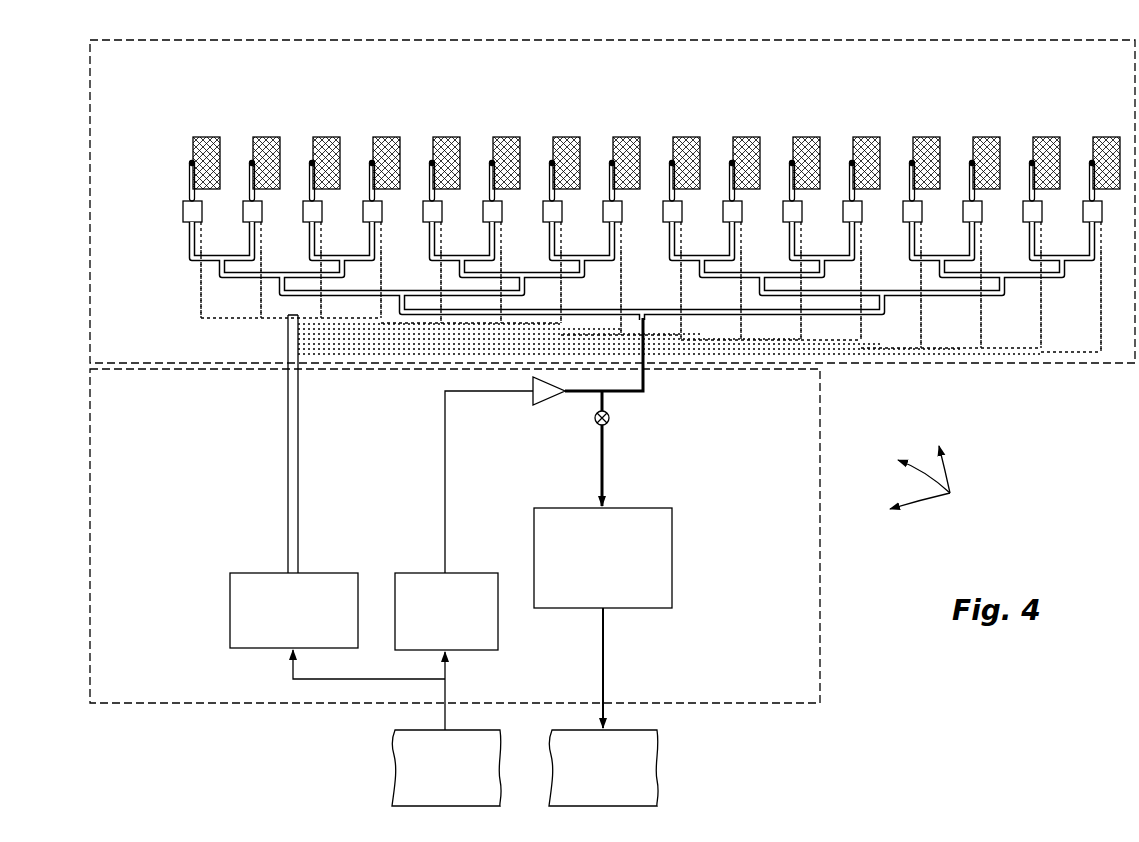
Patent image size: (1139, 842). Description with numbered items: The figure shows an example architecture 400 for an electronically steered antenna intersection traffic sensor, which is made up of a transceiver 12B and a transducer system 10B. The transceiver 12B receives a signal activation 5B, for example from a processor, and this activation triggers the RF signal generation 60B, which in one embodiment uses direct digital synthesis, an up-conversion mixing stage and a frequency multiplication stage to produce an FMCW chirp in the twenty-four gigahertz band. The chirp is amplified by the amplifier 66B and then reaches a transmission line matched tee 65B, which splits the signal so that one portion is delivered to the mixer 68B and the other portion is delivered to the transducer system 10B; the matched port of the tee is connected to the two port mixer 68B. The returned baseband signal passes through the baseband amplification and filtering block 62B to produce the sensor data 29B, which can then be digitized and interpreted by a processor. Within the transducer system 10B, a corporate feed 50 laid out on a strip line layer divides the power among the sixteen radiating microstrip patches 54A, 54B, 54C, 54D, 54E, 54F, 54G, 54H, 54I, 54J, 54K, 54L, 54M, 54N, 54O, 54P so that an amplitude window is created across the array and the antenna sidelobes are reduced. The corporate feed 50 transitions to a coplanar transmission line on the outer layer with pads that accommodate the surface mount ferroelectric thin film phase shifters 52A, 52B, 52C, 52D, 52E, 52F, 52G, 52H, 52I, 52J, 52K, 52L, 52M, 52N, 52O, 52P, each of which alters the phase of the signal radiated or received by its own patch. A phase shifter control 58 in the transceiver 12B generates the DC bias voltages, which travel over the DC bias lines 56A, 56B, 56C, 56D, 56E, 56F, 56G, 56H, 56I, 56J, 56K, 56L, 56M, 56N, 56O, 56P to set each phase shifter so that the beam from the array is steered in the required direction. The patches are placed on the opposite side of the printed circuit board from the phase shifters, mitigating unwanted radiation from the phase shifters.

The transducer system 10B is at (213, 93).
The transceiver 12B is at (133, 427).
The microstrip patch 54A is at (193, 140).
The microstrip patch 54B is at (251, 147).
The microstrip patch 54C is at (311, 147).
The microstrip patch 54D is at (371, 147).
The microstrip patch 54E is at (431, 147).
The microstrip patch 54F is at (491, 147).
The microstrip patch 54G is at (551, 147).
The microstrip patch 54H is at (611, 147).
The microstrip patch 54I is at (671, 147).
The microstrip patch 54J is at (731, 147).
The microstrip patch 54K is at (791, 147).
The microstrip patch 54L is at (851, 147).
The microstrip patch 54M is at (911, 147).
The microstrip patch 54N is at (971, 147).
The microstrip patch 54O is at (1031, 147).
The microstrip patch 54P is at (1091, 147).
The phase shifter 52A is at (182, 213).
The phase shifter 52B is at (242, 213).
The phase shifter 52C is at (302, 213).
The phase shifter 52D is at (362, 213).
The phase shifter 52E is at (422, 213).
The phase shifter 52F is at (482, 213).
The phase shifter 52G is at (542, 213).
The phase shifter 52H is at (602, 213).
The phase shifter 52I is at (662, 213).
The phase shifter 52J is at (722, 213).
The phase shifter 52K is at (782, 213).
The phase shifter 52L is at (842, 213).
The phase shifter 52M is at (902, 213).
The phase shifter 52N is at (962, 213).
The phase shifter 52O is at (1022, 213).
The phase shifter 52P is at (1082, 213).
The DC bias line 56A is at (200, 305).
The DC bias line 56B is at (275, 306).
The DC bias line 56C is at (310, 307).
The DC bias line 56D is at (383, 241).
The DC bias line 56E is at (440, 279).
The DC bias line 56F is at (503, 241).
The DC bias line 56G is at (561, 288).
The DC bias line 56H is at (621, 288).
The DC bias line 56I is at (681, 288).
The DC bias line 56J is at (743, 241).
The DC bias line 56K is at (802, 322).
The DC bias line 56L is at (863, 241).
The DC bias line 56M is at (921, 330).
The DC bias line 56N is at (981, 330).
The DC bias line 56O is at (1041, 330).
The DC bias line 56P is at (1050, 313).
The phase shifter control 58 is at (285, 641).
The RF signal generation 60B is at (461, 641).
The baseband amplification and filtering block 62B is at (589, 599).
The transmission line matched tee 65B is at (600, 390).
The amplifier 66B is at (550, 405).
The mixer 68B is at (610, 420).
The corporate feed 50 is at (648, 325).
The signal activation 5B is at (439, 797).
The sensor data 29B is at (591, 797).
The architecture 400 is at (952, 493).